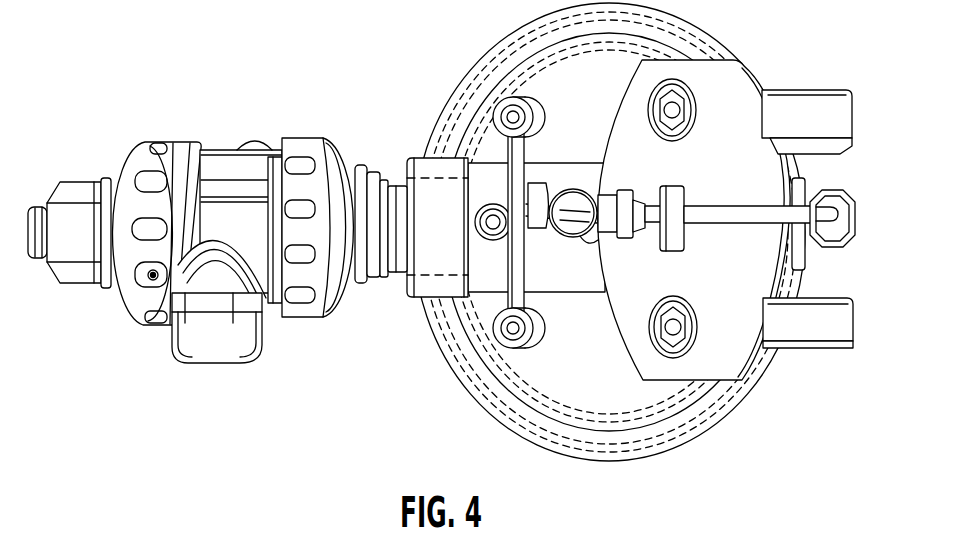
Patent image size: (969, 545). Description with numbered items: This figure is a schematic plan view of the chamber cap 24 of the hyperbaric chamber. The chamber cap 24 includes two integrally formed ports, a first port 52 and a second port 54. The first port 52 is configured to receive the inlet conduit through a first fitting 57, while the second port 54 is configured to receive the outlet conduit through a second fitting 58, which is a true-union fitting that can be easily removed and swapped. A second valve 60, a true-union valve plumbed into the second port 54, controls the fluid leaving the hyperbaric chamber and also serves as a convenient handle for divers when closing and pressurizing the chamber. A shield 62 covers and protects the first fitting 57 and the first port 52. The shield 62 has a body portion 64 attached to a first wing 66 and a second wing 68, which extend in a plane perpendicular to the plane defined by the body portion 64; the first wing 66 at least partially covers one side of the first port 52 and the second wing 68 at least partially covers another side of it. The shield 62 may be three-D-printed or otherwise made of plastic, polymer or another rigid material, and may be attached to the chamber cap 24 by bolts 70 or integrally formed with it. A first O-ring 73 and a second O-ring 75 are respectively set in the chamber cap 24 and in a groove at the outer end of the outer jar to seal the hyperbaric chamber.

The chamber cap 24 is at (592, 232).
The first port 52 is at (731, 253).
The second port 54 is at (424, 177).
The first fitting 57 is at (655, 245).
The second fitting 58 is at (181, 137).
The second valve 60 is at (265, 335).
The shield 62 is at (724, 198).
The body portion 64 is at (744, 178).
The first wing 66 is at (820, 90).
The second wing 68 is at (800, 350).
The bolts 70 is at (658, 88).
The first O-ring 73 is at (556, 50).
The second O-ring 75 is at (510, 42).